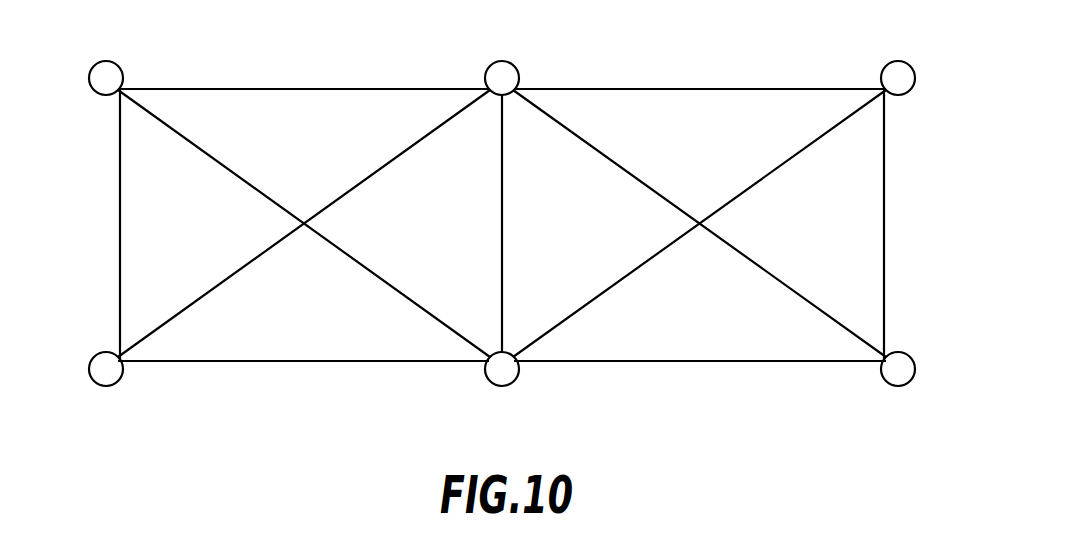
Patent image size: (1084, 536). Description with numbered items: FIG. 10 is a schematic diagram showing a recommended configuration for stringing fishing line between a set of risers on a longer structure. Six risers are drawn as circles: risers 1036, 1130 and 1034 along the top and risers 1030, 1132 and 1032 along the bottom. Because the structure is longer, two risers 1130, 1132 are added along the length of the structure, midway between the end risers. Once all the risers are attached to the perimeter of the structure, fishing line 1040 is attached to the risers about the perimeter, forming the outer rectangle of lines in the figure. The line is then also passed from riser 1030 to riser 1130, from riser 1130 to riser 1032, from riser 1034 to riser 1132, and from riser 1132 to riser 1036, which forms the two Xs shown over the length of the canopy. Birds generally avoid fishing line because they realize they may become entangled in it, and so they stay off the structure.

The riser 1036 is at (106, 61).
The riser 1130 is at (502, 61).
The riser 1034 is at (898, 61).
The riser 1030 is at (106, 387).
The riser 1132 is at (502, 387).
The riser 1032 is at (898, 387).
The fishing line 1040 is at (885, 226).